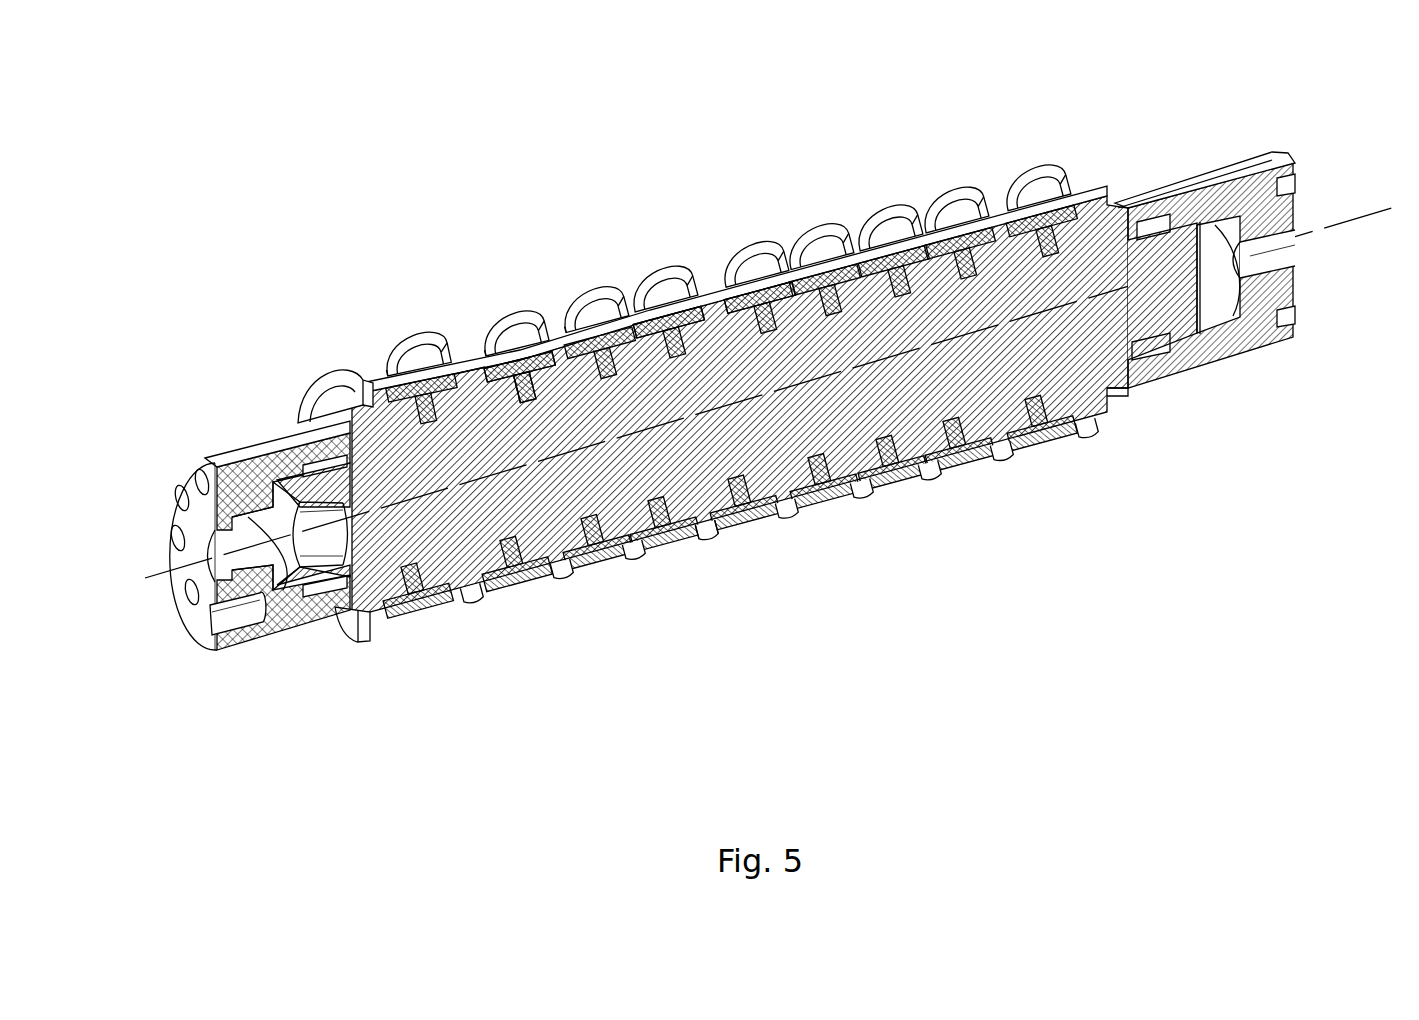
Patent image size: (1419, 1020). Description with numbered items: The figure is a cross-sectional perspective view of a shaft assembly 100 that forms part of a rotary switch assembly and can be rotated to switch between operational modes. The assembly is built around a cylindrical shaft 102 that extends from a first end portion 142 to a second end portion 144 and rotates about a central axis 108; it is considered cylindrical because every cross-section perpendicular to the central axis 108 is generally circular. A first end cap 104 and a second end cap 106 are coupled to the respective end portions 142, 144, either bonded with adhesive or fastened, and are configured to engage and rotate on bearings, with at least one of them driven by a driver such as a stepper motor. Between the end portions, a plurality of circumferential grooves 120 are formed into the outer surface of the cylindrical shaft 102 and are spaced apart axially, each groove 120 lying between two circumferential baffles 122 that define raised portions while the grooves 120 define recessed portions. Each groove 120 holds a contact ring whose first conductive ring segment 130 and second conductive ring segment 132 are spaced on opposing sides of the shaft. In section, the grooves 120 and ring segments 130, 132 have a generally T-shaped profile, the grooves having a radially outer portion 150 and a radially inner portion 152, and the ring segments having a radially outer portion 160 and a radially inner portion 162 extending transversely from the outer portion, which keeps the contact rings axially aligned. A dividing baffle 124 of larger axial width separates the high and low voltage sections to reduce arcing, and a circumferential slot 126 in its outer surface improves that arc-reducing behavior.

The shaft assembly 100 is at (1125, 190).
The cylindrical shaft 102 is at (853, 458).
The first end cap 104 is at (228, 478).
The second end cap 106 is at (1240, 372).
The central axis 108 is at (1355, 220).
The circumferential grooves 120 is at (455, 338).
The circumferential baffles 122 is at (445, 347).
The dividing baffle 124 is at (703, 545).
The circumferential slot 126 is at (718, 542).
The first conductive ring segment 130 is at (397, 385).
The second conductive ring segment 132 is at (420, 617).
The first end portion 142 is at (298, 587).
The second end portion 144 is at (1114, 406).
The radially outer portion 150 is at (470, 360).
The radially inner portion 152 is at (487, 360).
The radially outer portion 160 is at (526, 362).
The radially inner portion 162 is at (518, 362).